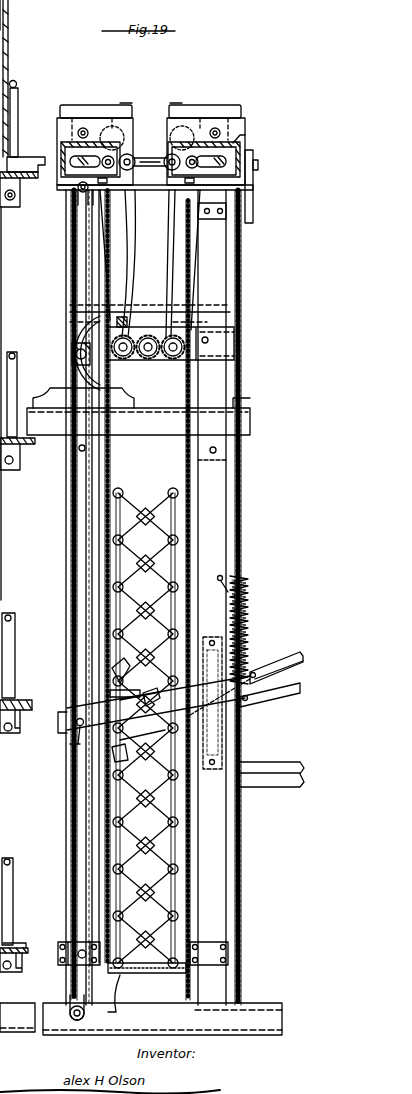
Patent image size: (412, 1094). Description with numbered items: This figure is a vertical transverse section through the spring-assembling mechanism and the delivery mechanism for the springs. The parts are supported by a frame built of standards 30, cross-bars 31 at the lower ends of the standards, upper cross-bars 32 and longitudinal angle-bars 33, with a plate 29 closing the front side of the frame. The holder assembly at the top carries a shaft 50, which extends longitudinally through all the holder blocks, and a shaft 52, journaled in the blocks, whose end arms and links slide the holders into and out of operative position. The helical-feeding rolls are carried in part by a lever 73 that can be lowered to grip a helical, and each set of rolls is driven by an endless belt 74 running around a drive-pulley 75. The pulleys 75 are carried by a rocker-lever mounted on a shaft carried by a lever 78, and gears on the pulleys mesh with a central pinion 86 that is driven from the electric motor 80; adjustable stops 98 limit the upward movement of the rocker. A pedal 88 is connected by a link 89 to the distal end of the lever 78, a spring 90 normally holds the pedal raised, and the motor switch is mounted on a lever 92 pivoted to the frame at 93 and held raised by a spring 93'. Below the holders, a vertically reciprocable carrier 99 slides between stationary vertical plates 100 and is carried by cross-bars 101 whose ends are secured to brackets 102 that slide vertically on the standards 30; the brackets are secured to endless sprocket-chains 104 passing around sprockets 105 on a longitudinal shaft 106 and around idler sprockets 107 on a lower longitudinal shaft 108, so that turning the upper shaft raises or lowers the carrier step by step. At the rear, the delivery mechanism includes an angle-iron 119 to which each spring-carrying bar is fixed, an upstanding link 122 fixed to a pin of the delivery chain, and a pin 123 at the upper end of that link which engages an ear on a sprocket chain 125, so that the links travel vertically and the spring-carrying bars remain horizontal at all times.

The plate 29 is at (244, 392).
The standards 30 is at (214, 240).
The cross-bars 31 is at (266, 1006).
The upper cross-bars 32 is at (254, 176).
The longitudinal angle-bars 33 is at (233, 143).
The shaft 50 is at (61, 145).
The shaft 52 is at (126, 138).
The lever 73 is at (98, 128).
The endless belt 74 is at (170, 262).
The drive-pulley 75 is at (122, 358).
The lever 78 is at (232, 342).
The motor 80 is at (50, 338).
The central pinion 86 is at (148, 357).
The pedal 88 is at (287, 657).
The link 89 is at (194, 550).
The spring 90 is at (240, 644).
The lever 92 is at (270, 700).
The pivot 93 is at (98, 710).
The spring 93' is at (245, 630).
The adjustable stops 98 is at (128, 330).
The carrier 99 is at (143, 970).
The vertical plates 100 is at (103, 853).
The cross-bars 101 is at (128, 997).
The brackets 102 is at (58, 957).
The sprocket-chains 104 is at (72, 922).
The sprockets 105 is at (70, 200).
The longitudinal shaft 106 is at (80, 203).
The idler sprockets 107 is at (78, 1020).
The longitudinal shaft 108 is at (134, 190).
The angle-iron 119 is at (8, 50).
The upstanding link 122 is at (18, 94).
The pin 123 is at (14, 80).
The sprocket chain 125 is at (5, 22).